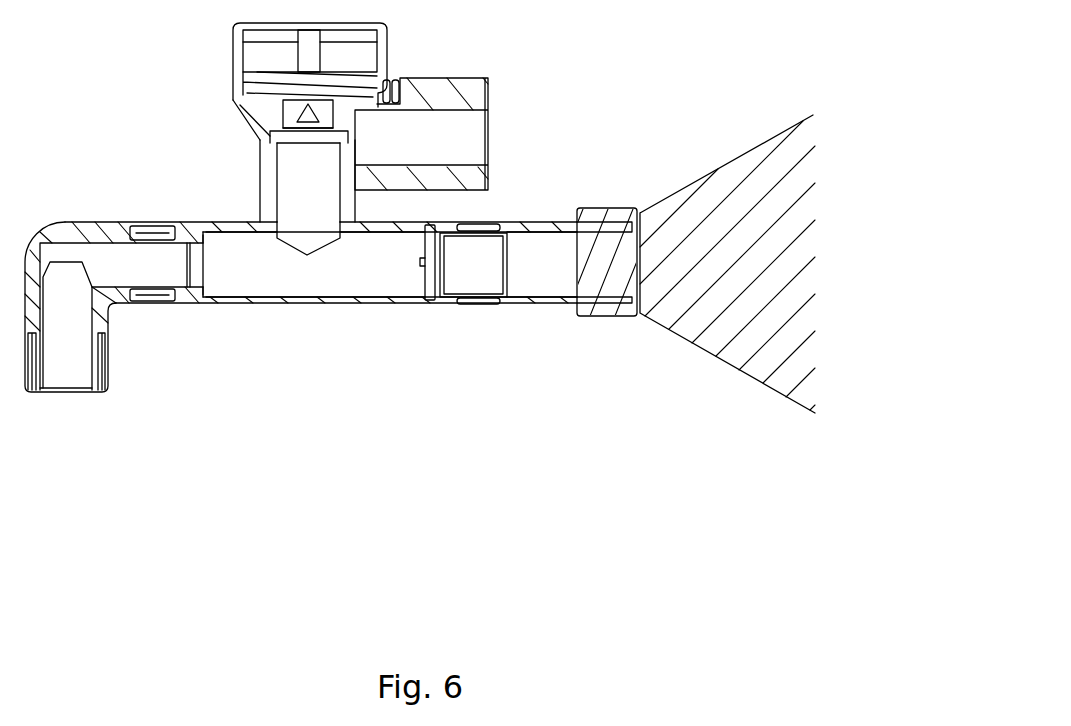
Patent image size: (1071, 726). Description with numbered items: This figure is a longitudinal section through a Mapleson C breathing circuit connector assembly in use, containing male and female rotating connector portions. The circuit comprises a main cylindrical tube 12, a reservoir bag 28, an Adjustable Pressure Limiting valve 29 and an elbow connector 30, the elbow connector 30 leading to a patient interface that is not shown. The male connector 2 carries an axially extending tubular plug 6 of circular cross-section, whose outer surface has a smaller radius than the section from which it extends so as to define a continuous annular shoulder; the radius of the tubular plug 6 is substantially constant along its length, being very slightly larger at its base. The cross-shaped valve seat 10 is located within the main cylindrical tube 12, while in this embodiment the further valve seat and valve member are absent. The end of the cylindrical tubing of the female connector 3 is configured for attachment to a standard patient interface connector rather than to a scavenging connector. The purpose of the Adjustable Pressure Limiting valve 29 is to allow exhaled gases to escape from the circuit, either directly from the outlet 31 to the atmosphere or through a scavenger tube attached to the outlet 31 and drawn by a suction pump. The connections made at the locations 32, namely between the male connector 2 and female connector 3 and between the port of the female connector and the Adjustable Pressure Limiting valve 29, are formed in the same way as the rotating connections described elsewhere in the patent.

The male connector 2 is at (510, 305).
The female connector 3 is at (217, 305).
The tubular plug 6 is at (475, 273).
The cross-shaped valve seat 10 is at (436, 290).
The main cylindrical tube 12 is at (400, 305).
The reservoir bag 28 is at (735, 325).
The Adjustable Pressure Limiting (APL) valve 29 is at (233, 42).
The elbow connector 30 is at (110, 305).
The outlet 31 is at (463, 135).
The connections 32 is at (260, 178).